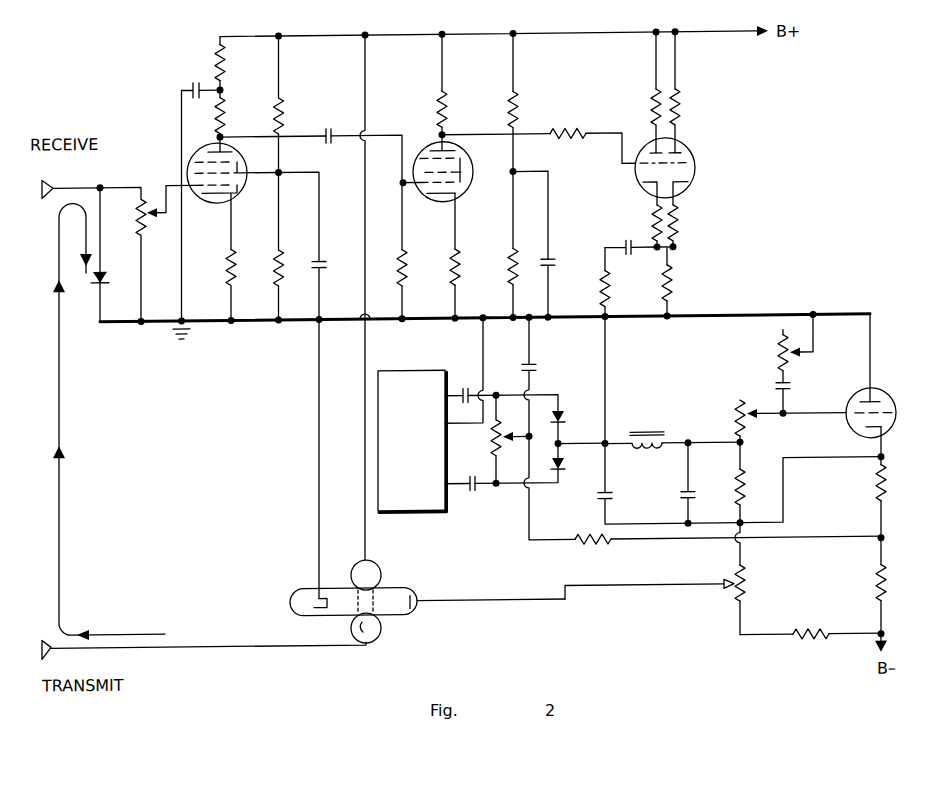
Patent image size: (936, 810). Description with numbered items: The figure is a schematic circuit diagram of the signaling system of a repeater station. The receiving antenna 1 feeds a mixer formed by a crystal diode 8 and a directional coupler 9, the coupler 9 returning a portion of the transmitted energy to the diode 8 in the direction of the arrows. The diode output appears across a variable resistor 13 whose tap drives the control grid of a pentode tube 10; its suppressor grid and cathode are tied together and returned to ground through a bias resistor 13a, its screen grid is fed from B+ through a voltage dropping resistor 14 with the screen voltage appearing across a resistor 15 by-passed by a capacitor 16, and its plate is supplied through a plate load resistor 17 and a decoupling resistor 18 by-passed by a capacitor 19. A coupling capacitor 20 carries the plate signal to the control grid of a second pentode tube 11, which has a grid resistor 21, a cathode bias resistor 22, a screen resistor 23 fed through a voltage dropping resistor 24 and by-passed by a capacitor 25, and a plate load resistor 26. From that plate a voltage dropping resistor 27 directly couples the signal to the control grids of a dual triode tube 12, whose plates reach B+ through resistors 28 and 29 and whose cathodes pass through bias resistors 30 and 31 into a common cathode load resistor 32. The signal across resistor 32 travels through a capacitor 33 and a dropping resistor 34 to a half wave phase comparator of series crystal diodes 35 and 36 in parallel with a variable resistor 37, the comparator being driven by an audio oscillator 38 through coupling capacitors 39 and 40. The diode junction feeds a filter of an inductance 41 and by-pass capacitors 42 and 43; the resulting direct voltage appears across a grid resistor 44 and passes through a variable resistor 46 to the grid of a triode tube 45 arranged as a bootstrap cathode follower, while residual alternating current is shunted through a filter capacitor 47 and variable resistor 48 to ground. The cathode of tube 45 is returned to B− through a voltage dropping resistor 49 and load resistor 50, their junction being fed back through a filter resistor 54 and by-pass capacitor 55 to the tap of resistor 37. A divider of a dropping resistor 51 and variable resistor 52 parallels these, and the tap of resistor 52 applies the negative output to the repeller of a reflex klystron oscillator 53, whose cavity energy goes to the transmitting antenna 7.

The receiving antenna 1 is at (49, 177).
The transmitting antenna 7 is at (45, 634).
The crystal diode 8 is at (104, 274).
The directional coupler 9 is at (60, 523).
The pentode tube 10 is at (201, 149).
The pentode tube 11 is at (433, 147).
The dual triode tube 12 is at (692, 159).
The variable resistor 13 is at (145, 194).
The bias resistor 13a is at (235, 260).
The voltage dropping resistor 14 is at (291, 109).
The resistor 15 is at (281, 260).
The capacitor 16 is at (322, 258).
The plate load resistor 17 is at (228, 110).
The decoupling resistor 18 is at (228, 64).
The capacitor 19 is at (195, 80).
The coupling capacitor 20 is at (336, 123).
The grid resistor 21 is at (407, 262).
The cathode bias resistor 22 is at (463, 262).
The resistor 23 is at (515, 261).
The voltage dropping resistor 24 is at (518, 107).
The capacitor 25 is at (553, 261).
The plate load resistor 26 is at (447, 107).
The voltage dropping resistor 27 is at (572, 139).
The voltage dropping resistor 28 is at (648, 109).
The voltage dropping resistor 29 is at (683, 109).
The bias resistor 30 is at (652, 221).
The bias resistor 31 is at (681, 222).
The cathode load resistor 32 is at (676, 283).
The capacitor 33 is at (628, 257).
The dropping resistor 34 is at (600, 283).
The crystal diode 35 is at (565, 421).
The crystal diode 36 is at (565, 467).
The variable resistor 37 is at (487, 433).
The audio oscillator 38 is at (412, 373).
The coupling capacitor 39 is at (462, 387).
The coupling capacitor 40 is at (475, 493).
The inductance 41 is at (657, 449).
The by-pass capacitor 42 is at (612, 498).
The by-pass capacitor 43 is at (694, 499).
The grid resistor 44 is at (747, 491).
The triode tube 45 is at (887, 407).
The variable resistor 46 is at (735, 418).
The filter capacitor 47 is at (795, 389).
The variable resistor 48 is at (775, 354).
The voltage dropping resistor 49 is at (888, 488).
The load resistor 50 is at (895, 583).
The dropping resistor 51 is at (800, 633).
The variable resistor 52 is at (750, 578).
The reflex klystron oscillator 53 is at (393, 590).
The filter resistor 54 is at (592, 546).
The by-pass capacitor 55 is at (540, 370).